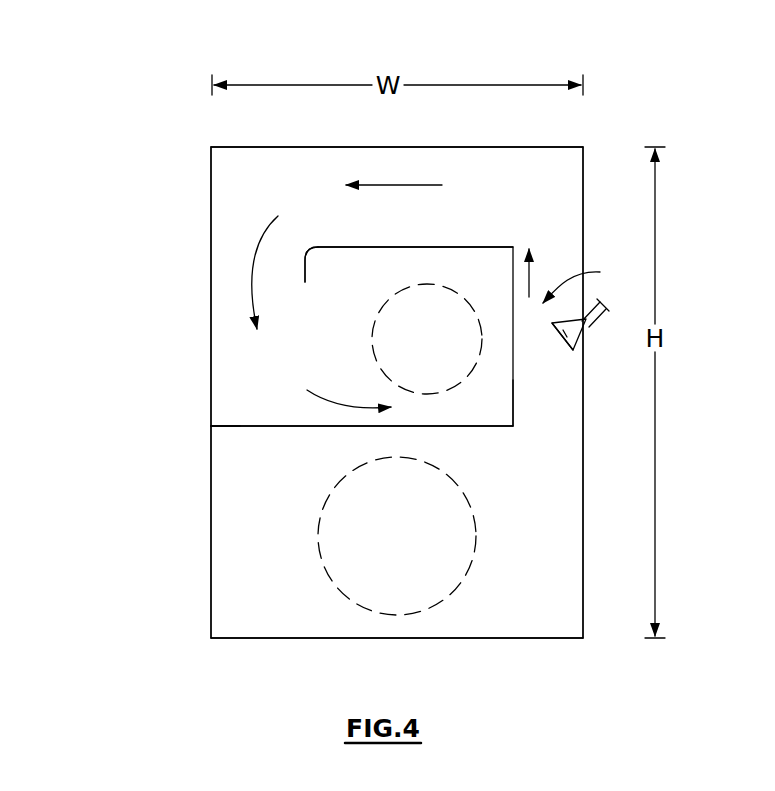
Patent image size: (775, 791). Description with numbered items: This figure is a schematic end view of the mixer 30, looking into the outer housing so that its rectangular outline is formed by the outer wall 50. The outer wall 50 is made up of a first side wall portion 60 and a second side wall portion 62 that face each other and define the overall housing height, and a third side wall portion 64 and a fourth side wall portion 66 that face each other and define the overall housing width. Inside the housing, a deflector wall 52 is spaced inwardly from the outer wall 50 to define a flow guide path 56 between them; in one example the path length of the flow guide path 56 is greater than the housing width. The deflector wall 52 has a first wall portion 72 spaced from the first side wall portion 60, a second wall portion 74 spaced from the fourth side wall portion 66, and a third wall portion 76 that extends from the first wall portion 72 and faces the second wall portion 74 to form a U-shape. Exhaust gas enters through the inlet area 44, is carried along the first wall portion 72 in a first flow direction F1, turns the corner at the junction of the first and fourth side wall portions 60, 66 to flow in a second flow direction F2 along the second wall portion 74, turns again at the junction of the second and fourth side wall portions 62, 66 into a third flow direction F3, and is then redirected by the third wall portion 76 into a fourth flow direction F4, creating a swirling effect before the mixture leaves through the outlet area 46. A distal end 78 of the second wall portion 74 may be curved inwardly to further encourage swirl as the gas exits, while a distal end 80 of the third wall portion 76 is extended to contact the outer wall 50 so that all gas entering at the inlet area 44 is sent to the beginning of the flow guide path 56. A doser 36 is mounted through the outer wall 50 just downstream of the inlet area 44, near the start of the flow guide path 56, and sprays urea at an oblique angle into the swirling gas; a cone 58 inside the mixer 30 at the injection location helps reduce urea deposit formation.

The mixer 30 is at (667, 92).
The doser 36 is at (590, 323).
The inlet area 44 is at (465, 578).
The outlet area 46 is at (378, 360).
The outer wall 50 is at (211, 598).
The deflector wall 52 is at (503, 247).
The flow guide path 56 is at (593, 280).
The cone 58 is at (560, 340).
The first side wall portion 60 is at (583, 537).
The second side wall portion 62 is at (211, 338).
The third side wall portion 64 is at (290, 638).
The fourth side wall portion 66 is at (409, 147).
The first wall portion 72 is at (513, 398).
The second wall portion 74 is at (377, 247).
The third wall portion 76 is at (358, 426).
The distal end 78 is at (310, 262).
The distal end 80 is at (211, 425).
The first flow direction F1 is at (530, 270).
The second flow direction F2 is at (420, 185).
The third flow direction F3 is at (255, 270).
The fourth flow direction F4 is at (340, 401).